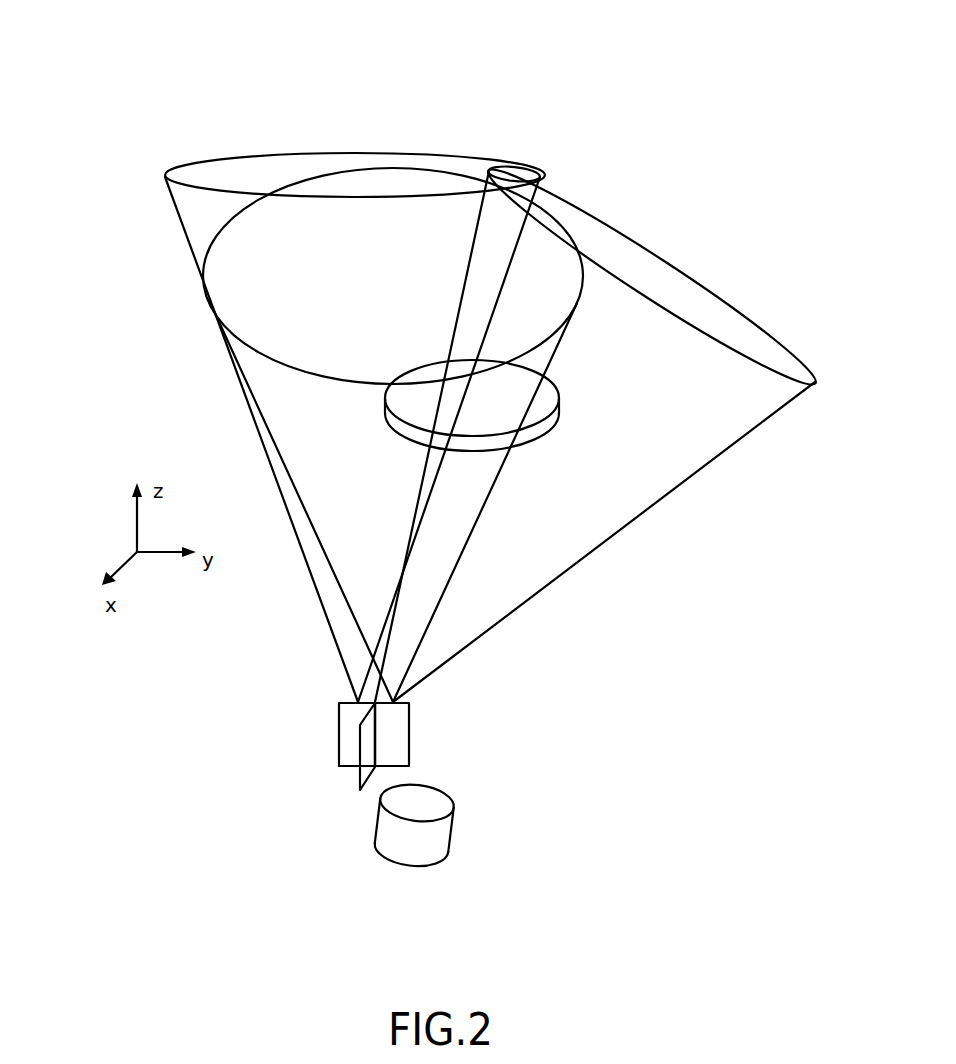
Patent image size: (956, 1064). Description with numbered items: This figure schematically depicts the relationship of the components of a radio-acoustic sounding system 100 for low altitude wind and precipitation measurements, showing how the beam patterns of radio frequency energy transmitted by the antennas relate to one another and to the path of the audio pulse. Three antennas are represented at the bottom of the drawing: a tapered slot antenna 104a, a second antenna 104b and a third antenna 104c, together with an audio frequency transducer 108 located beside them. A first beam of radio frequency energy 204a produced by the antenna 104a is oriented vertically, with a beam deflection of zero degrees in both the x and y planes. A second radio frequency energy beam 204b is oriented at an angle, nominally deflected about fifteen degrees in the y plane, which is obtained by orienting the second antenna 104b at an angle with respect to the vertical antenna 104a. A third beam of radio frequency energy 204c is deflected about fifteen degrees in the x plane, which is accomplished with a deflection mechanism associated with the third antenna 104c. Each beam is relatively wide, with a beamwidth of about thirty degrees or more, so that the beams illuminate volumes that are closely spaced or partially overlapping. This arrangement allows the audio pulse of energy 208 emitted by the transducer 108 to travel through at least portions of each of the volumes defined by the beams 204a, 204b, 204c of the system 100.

The radio-acoustic sounding system 100 is at (193, 653).
The tapered slot antenna 104a is at (340, 742).
The second antenna 104b is at (360, 792).
The third antenna 104c is at (410, 730).
The audio frequency transducer 108 is at (455, 835).
The beam of radio frequency energy 204a is at (350, 154).
The second radio frequency energy beam 204b is at (755, 320).
The third beam of radio frequency energy 204c is at (207, 294).
The audio pulse of energy 208 is at (548, 437).